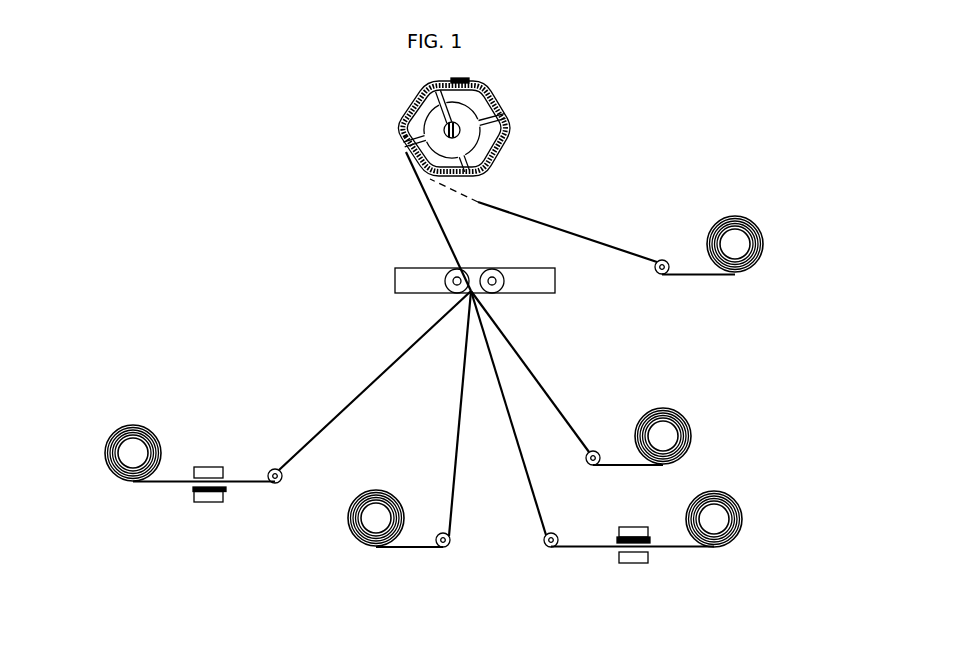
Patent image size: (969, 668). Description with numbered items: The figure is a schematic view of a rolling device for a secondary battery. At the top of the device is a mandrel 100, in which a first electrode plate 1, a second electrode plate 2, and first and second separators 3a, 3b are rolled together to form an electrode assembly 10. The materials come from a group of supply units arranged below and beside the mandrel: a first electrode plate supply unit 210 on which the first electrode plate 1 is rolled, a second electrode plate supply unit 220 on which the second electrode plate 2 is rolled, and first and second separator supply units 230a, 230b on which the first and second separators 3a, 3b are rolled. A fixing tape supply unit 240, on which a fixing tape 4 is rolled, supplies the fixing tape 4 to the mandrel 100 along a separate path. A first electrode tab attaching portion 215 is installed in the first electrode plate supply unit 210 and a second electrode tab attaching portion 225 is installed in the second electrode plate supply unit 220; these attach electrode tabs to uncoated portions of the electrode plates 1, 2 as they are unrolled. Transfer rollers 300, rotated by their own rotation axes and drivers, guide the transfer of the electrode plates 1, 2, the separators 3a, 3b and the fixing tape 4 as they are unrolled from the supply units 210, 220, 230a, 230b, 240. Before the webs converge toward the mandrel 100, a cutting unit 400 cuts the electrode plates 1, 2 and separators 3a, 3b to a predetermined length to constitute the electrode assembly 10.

The electrode assembly 10 is at (449, 127).
The mandrel 100 is at (396, 128).
The cutting unit 400 is at (398, 281).
The first electrode plate 1 is at (363, 392).
The second electrode plate 2 is at (522, 471).
The first separator 3a is at (459, 426).
The second separator 3b is at (523, 358).
The fixing tape 4 is at (590, 236).
The first electrode plate supply unit 210 is at (100, 472).
The first electrode tab attaching portion 215 is at (208, 503).
The second electrode plate supply unit 220 is at (754, 518).
The second electrode tab attaching portion 225 is at (633, 526).
The first separator supply unit 230a is at (340, 521).
The second separator supply unit 230b is at (700, 437).
The fixing tape supply unit 240 is at (772, 246).
The transfer rollers 300 is at (443, 549).